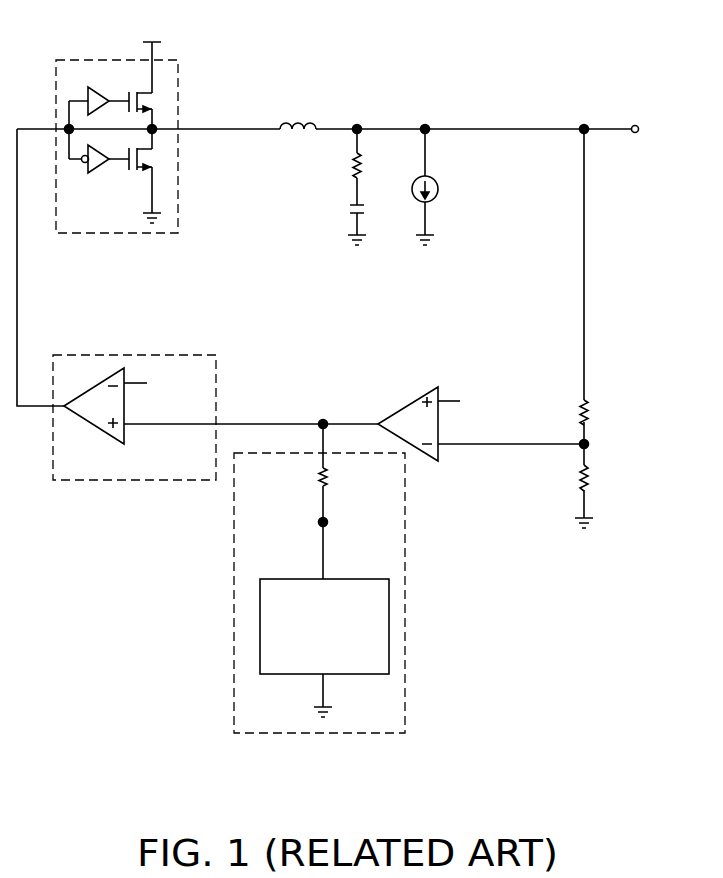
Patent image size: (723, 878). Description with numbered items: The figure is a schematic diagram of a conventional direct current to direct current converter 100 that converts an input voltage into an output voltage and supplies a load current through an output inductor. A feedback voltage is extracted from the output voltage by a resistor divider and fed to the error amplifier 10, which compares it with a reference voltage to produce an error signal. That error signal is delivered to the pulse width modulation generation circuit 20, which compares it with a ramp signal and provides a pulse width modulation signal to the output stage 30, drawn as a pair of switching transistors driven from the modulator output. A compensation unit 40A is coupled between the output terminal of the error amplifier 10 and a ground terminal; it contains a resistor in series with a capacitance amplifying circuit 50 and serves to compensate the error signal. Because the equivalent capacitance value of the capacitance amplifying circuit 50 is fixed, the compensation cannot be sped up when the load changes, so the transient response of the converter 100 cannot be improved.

The direct current (DC)-DC converter 100 is at (582, 738).
The output stage 30 is at (180, 83).
The pulse width modulation (PWM) generation circuit 20 is at (172, 354).
The error amplifier 10 is at (413, 398).
The compensation unit 40A is at (405, 550).
The capacitance amplifying circuit 50 is at (355, 579).